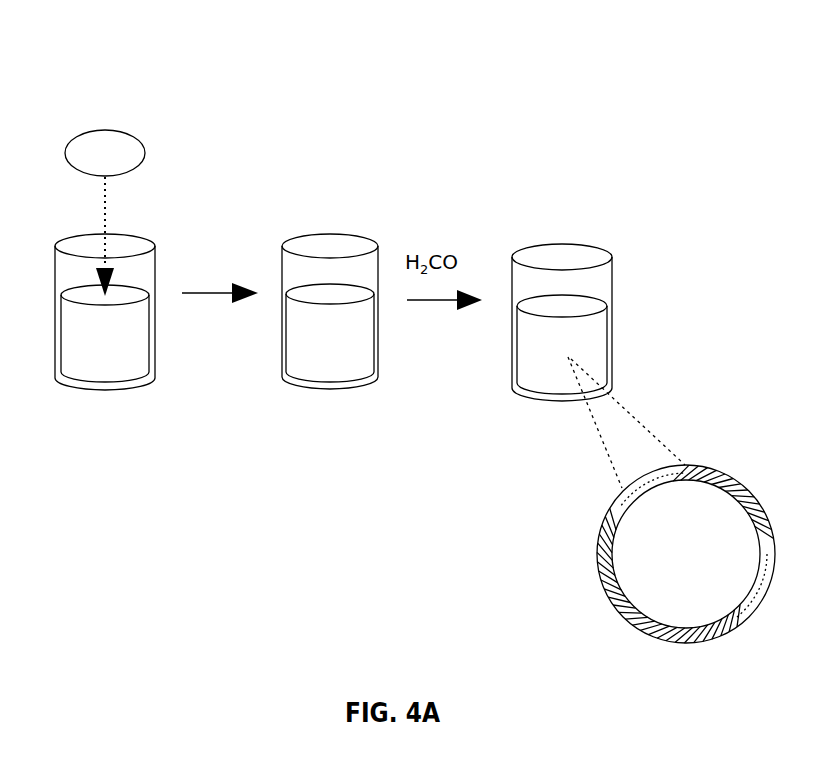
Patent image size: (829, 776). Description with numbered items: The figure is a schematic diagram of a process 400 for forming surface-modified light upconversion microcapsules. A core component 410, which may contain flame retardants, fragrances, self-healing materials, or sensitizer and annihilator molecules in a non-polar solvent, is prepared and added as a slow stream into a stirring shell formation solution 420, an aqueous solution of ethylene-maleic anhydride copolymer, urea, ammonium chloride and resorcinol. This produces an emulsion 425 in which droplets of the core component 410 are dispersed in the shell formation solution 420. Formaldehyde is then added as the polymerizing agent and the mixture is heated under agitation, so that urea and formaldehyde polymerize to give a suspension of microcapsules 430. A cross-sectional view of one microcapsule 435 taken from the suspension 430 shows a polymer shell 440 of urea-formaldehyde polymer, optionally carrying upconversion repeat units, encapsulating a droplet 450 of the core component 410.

The process 400 is at (225, 45).
The core component 410 is at (106, 130).
The shell formation solution 420 is at (63, 352).
The emulsion 425 is at (286, 338).
The suspension of microcapsules 430 is at (517, 348).
The microcapsule 435 is at (645, 542).
The polymer shell 440 is at (598, 555).
The droplet 450 is at (685, 600).